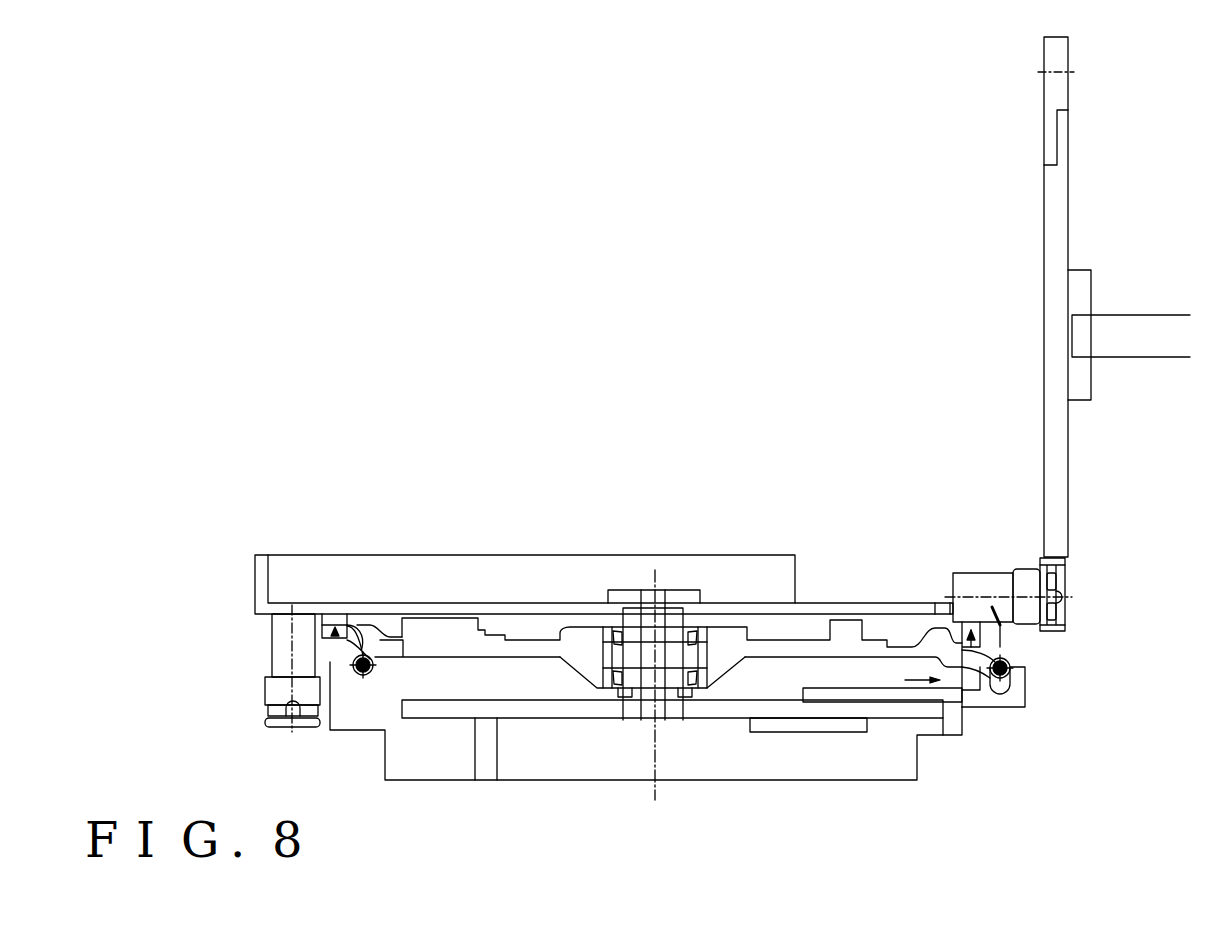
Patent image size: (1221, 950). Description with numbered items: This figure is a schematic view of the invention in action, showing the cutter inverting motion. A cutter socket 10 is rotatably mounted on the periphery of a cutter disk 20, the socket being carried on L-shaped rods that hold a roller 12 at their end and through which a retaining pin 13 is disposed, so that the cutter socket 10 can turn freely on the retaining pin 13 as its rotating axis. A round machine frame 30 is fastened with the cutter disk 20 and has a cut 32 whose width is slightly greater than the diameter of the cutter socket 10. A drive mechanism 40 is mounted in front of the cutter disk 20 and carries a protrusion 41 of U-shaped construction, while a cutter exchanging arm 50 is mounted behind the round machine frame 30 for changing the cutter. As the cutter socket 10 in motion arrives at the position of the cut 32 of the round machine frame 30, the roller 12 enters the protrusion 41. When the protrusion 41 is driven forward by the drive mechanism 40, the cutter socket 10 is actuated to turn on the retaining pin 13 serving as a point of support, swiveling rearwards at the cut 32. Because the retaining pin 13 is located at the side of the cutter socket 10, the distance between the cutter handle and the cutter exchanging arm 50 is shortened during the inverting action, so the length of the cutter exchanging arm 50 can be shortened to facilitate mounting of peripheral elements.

The cutter socket 10 is at (980, 586).
The roller 12 is at (1007, 660).
The retaining pin 13 is at (964, 695).
The cutter disk 20 is at (879, 622).
The round machine frame 30 is at (817, 612).
The cut 32 is at (945, 612).
The drive mechanism 40 is at (833, 750).
The protrusion 41 is at (1018, 692).
The cutter exchanging arm 50 is at (1052, 517).